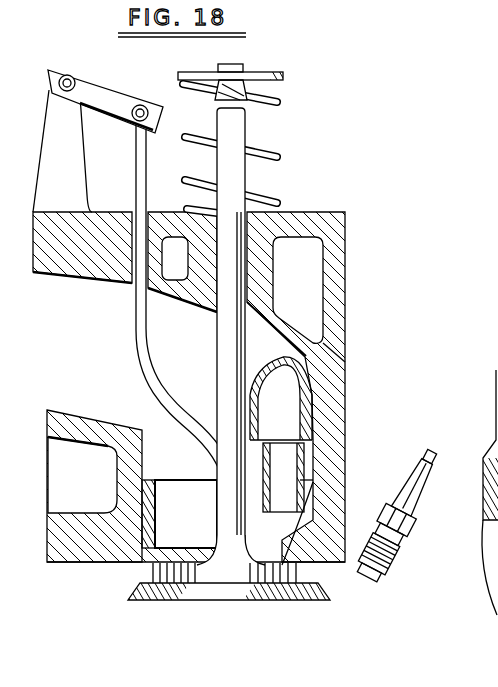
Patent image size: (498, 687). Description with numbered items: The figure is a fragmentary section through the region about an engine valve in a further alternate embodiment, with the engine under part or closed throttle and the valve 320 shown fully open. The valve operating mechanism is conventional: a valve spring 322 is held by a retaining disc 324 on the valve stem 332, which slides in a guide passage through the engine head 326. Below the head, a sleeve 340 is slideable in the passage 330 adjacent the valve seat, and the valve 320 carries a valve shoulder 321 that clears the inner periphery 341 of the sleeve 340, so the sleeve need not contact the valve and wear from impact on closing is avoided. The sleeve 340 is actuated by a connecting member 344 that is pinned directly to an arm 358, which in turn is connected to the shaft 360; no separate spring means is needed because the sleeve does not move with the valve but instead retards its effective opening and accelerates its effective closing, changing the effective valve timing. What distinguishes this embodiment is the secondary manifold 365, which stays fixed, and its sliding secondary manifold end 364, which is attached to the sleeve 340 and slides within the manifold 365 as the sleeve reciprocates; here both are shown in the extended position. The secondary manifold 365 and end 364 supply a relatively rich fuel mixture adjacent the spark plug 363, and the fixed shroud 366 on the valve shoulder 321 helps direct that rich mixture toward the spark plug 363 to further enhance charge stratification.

The valve 320 is at (225, 603).
The valve shoulder 321 is at (203, 577).
The valve spring 322 is at (284, 156).
The retaining disc 324 is at (286, 76).
The engine head 326 is at (347, 333).
The passage 330 is at (110, 406).
The valve stem 332 is at (225, 370).
The sleeve 340 is at (142, 492).
The inner periphery of the sleeve 341 is at (157, 499).
The connecting member 344 is at (134, 355).
The arm 358 is at (118, 95).
The shaft 360 is at (68, 79).
The spark plug 363 is at (407, 512).
The secondary manifold end 364 is at (280, 580).
The secondary manifold 365 is at (285, 403).
The shroud 366 is at (253, 533).